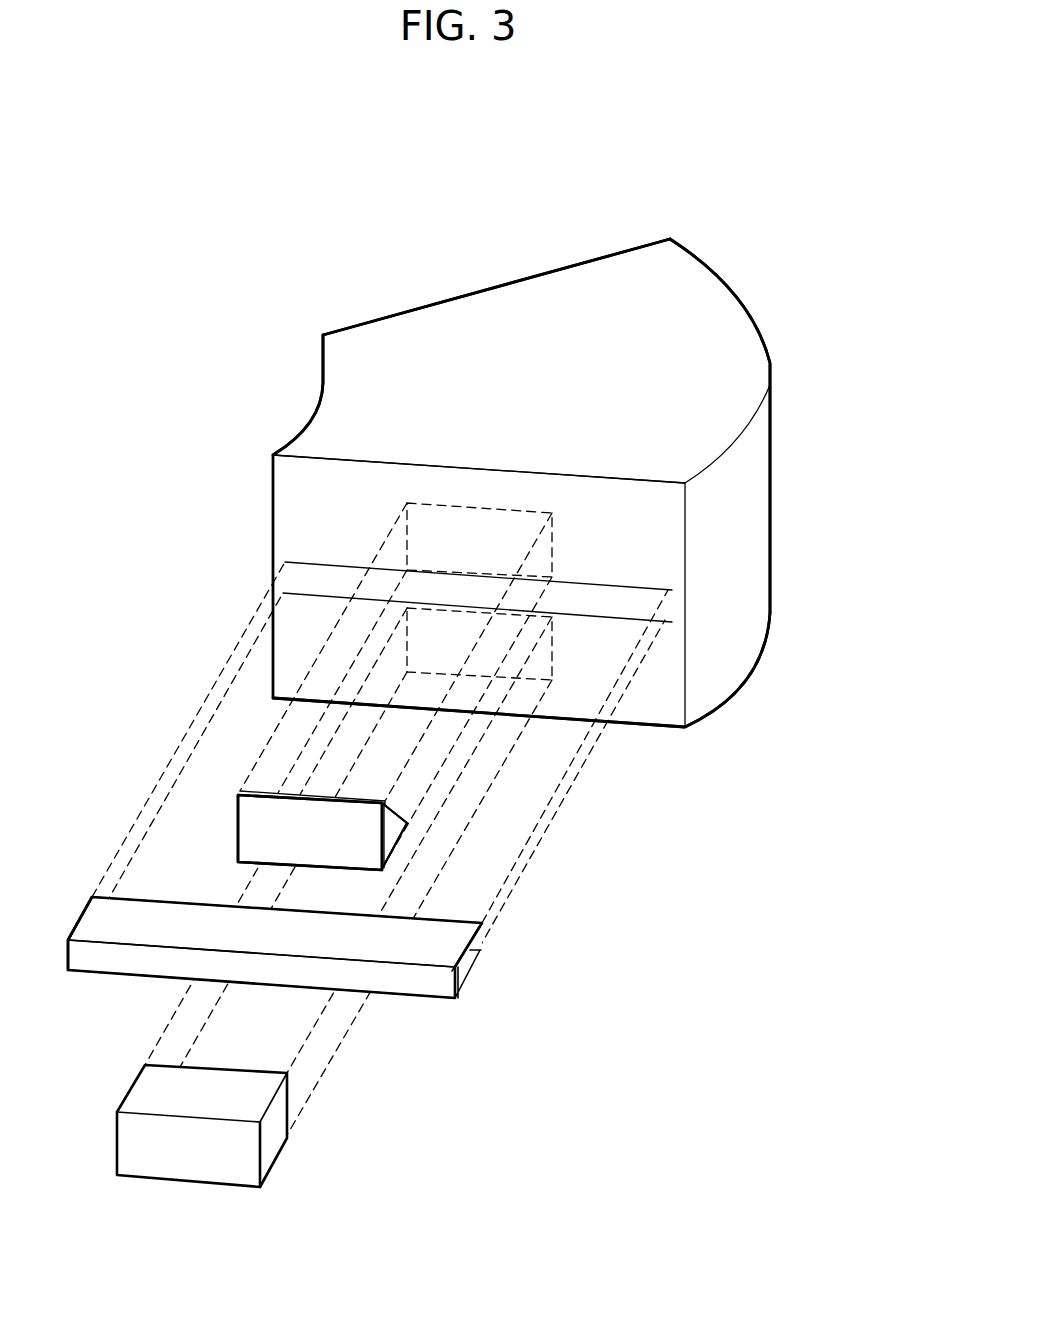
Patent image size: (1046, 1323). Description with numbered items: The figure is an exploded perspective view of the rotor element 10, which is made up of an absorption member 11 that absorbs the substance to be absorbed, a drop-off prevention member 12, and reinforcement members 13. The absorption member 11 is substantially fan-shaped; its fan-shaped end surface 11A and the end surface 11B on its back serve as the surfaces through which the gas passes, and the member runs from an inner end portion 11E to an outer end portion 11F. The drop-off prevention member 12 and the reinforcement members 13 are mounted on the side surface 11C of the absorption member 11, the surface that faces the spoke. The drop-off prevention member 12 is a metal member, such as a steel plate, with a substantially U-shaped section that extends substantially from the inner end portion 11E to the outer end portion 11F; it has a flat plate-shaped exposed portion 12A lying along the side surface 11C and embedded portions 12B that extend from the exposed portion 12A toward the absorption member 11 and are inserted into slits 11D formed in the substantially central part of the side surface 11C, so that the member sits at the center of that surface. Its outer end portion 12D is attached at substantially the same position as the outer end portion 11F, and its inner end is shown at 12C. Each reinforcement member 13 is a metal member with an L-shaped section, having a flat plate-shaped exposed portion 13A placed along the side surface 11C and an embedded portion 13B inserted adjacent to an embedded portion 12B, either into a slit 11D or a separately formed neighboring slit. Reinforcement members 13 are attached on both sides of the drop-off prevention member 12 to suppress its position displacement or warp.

The rotor element 10 is at (740, 140).
The absorption member 11 is at (687, 267).
The end surface 11A is at (426, 278).
The end surface 11B is at (636, 752).
The side surface 11C is at (295, 513).
The slits 11D is at (635, 583).
The inner end portion 11E is at (258, 383).
The outer end portion 11F is at (794, 378).
The drop-off prevention member 12 is at (359, 873).
The exposed portion 12A is at (385, 978).
The embedded portions 12B is at (408, 940).
The left end face of bar 12C is at (88, 953).
The outer end portion 12D is at (445, 987).
The reinforcement member 13 is at (272, 835).
The exposed portion 13A is at (360, 838).
The embedded portion 13B is at (393, 830).